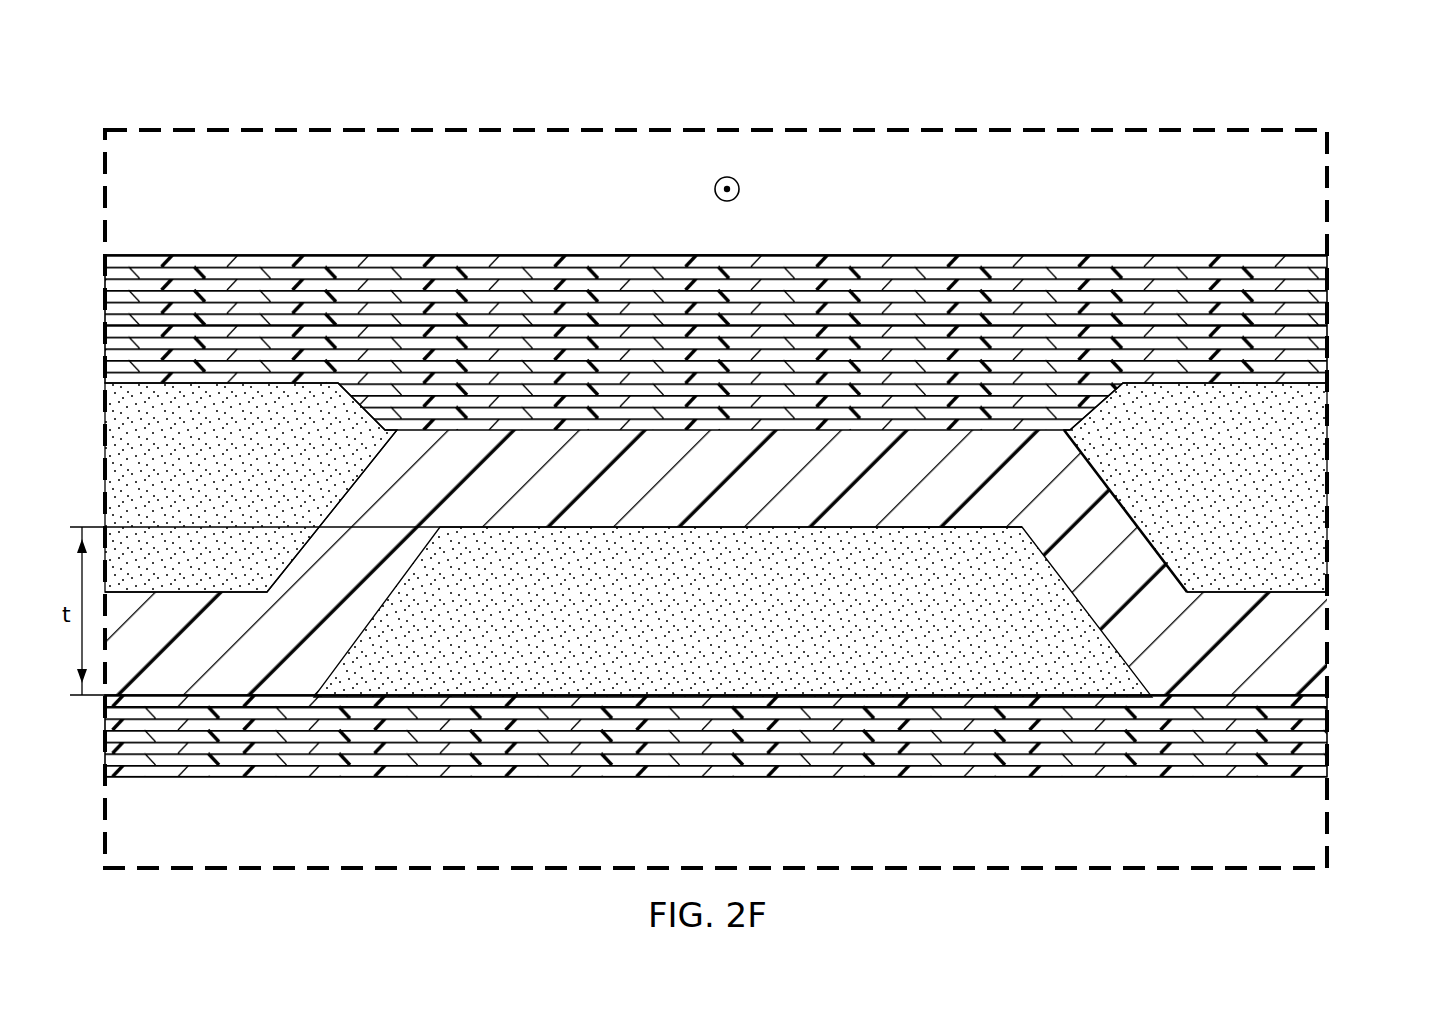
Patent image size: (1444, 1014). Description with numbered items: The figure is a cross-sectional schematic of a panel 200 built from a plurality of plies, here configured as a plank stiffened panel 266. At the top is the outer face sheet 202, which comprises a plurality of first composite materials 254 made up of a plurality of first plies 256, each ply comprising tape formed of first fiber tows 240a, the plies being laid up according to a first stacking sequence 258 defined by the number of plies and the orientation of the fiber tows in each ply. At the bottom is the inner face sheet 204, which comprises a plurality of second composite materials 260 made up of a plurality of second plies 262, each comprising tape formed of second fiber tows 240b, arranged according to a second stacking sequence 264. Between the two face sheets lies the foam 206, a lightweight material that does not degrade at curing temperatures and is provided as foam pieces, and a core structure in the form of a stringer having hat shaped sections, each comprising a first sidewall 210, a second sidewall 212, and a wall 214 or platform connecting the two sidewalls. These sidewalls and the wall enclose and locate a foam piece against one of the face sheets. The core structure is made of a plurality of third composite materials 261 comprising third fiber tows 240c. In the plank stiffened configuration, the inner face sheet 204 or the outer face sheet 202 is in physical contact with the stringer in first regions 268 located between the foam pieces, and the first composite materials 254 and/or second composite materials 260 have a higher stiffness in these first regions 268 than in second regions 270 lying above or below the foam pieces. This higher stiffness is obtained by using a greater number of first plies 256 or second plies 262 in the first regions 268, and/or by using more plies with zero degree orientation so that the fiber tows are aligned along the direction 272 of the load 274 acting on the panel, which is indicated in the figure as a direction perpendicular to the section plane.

The panel 200 is at (1099, 92).
The outer face sheet 202 is at (589, 254).
The inner face sheet 204 is at (598, 777).
The foam 206 is at (739, 628).
The first sidewall 210 is at (357, 498).
The second sidewall 212 is at (1118, 515).
The wall 214 is at (968, 521).
The first fiber tows 240a is at (978, 257).
The second fiber tows 240b is at (805, 696).
The third fiber tows 240c is at (842, 521).
The first composite materials 254 is at (1351, 281).
The first plies 256 is at (1318, 330).
The first stacking sequence 258 is at (1258, 244).
The second composite materials 260 is at (1353, 753).
The third composite materials 261 is at (1148, 553).
The second plies 262 is at (1317, 703).
The second stacking sequence 264 is at (1269, 786).
The plank stiffened panel 266 is at (729, 434).
The first regions 268 is at (680, 235).
The second regions 270 is at (217, 246).
The direction 272 is at (740, 183).
The load 274 is at (795, 170).